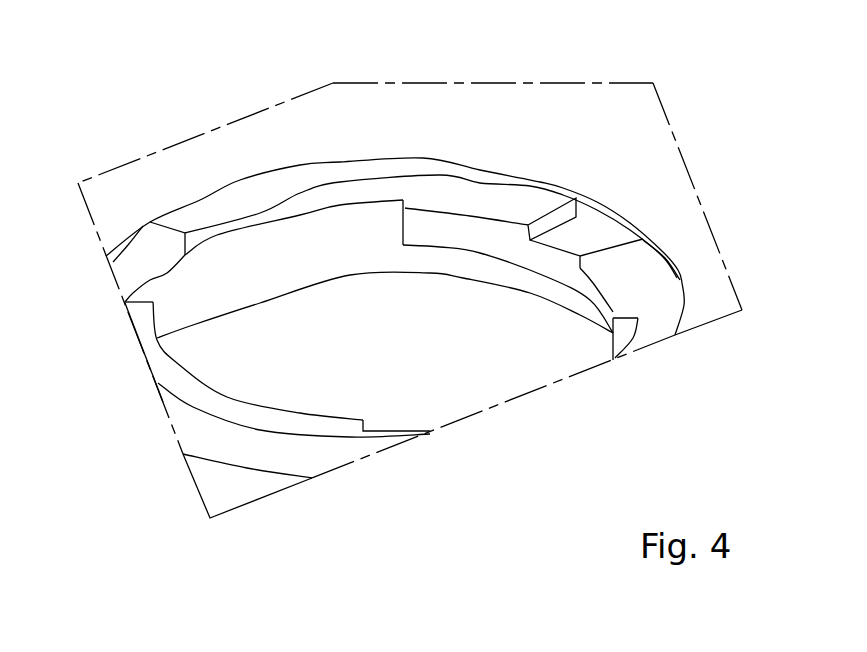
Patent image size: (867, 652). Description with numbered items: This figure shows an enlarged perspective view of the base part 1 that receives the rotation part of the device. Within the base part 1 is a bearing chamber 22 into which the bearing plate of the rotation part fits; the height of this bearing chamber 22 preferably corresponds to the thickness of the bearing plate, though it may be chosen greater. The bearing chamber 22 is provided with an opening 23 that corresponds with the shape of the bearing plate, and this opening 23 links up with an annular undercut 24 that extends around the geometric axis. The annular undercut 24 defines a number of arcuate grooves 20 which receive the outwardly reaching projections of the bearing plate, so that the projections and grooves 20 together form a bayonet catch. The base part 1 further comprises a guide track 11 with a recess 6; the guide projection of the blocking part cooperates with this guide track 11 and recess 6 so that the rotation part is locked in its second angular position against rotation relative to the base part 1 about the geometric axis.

The base part 1 is at (536, 146).
The recess 6 is at (580, 235).
The guide track 11 is at (260, 213).
The arcuate grooves 20 is at (455, 262).
The bearing chamber 22 is at (402, 360).
The opening 23 is at (376, 207).
The annular undercut 24 is at (337, 258).